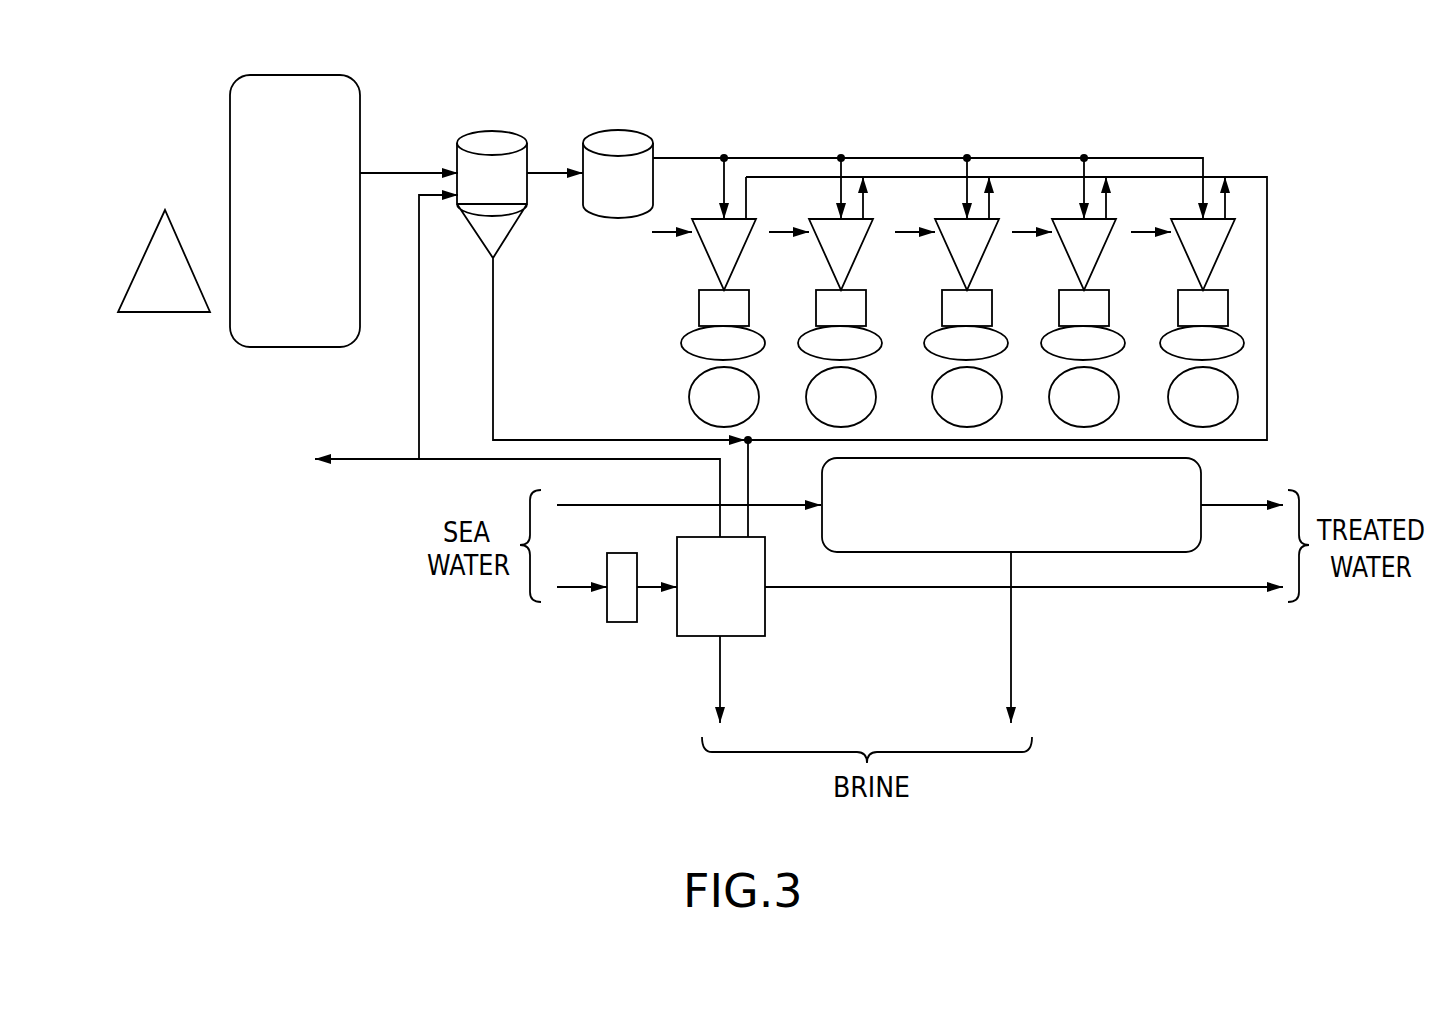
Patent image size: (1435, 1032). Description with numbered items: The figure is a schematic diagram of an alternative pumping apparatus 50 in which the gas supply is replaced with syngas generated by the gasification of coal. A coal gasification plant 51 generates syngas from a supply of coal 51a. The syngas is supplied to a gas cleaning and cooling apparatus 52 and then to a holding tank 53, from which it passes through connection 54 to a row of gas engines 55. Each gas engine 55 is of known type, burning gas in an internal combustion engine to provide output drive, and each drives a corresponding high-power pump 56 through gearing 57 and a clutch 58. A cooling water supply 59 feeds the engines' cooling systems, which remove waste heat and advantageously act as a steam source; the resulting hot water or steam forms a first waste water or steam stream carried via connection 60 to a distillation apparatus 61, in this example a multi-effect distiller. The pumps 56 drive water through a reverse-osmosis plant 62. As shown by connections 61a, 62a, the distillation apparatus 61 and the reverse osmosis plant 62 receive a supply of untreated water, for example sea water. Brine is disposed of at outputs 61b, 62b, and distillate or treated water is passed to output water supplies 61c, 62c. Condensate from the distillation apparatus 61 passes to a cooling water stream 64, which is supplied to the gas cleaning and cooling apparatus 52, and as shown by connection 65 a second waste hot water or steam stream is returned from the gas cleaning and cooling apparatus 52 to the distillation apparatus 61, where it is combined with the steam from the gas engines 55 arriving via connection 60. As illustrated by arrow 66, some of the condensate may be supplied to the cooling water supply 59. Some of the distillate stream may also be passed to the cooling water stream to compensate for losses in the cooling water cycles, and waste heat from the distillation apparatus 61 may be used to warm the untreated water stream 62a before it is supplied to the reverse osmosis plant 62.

The pumping apparatus 50 is at (1113, 72).
The coal gasification plant 51 is at (293, 332).
The supply of coal 51a is at (168, 300).
The gas cleaning and cooling apparatus 52 is at (481, 130).
The holding tank 53 is at (605, 130).
The connection 54 is at (797, 158).
The gas engines 55 is at (710, 266).
The high-power pump 56 is at (691, 392).
The gearing 57 is at (700, 312).
The clutch 58 is at (686, 350).
The cooling water supply 59 is at (664, 232).
The connection 60 is at (1267, 232).
The distillation apparatus 61 is at (697, 628).
The connection 61a is at (571, 586).
The output 61b is at (720, 678).
The output water supply 61c is at (1120, 587).
The reverse-osmosis plant 62 is at (1182, 525).
The connection 62a is at (648, 505).
The output 62b is at (1010, 650).
The output water supply 62c is at (1242, 505).
The cooling water stream 64 is at (514, 462).
The connection 65 is at (493, 368).
The arrow 66 is at (396, 459).